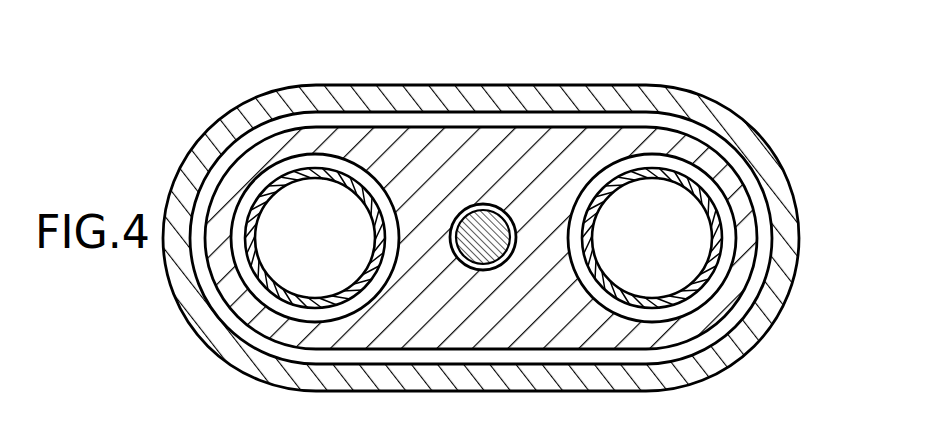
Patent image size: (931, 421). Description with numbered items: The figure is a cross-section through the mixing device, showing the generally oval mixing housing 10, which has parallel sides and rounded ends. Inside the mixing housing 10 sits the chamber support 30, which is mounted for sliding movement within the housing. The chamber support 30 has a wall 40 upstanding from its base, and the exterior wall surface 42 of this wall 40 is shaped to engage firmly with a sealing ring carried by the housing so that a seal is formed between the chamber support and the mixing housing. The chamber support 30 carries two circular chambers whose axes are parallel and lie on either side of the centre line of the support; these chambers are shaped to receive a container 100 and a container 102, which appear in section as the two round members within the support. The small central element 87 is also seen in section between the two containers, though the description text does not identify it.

The mixing housing 10 is at (796, 168).
The chamber support 30 is at (397, 112).
The wall 40 is at (245, 308).
The exterior wall surface 42 is at (323, 130).
The strength member 87 is at (500, 205).
The container 100 is at (336, 248).
The container 102 is at (712, 228).